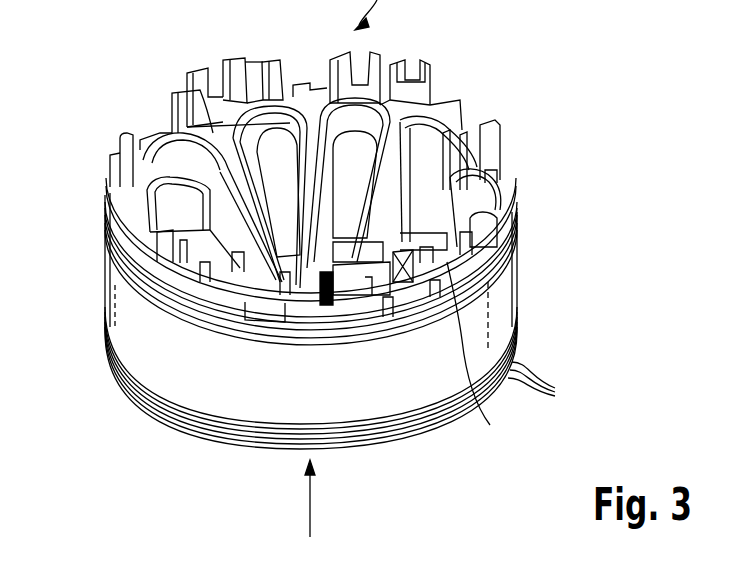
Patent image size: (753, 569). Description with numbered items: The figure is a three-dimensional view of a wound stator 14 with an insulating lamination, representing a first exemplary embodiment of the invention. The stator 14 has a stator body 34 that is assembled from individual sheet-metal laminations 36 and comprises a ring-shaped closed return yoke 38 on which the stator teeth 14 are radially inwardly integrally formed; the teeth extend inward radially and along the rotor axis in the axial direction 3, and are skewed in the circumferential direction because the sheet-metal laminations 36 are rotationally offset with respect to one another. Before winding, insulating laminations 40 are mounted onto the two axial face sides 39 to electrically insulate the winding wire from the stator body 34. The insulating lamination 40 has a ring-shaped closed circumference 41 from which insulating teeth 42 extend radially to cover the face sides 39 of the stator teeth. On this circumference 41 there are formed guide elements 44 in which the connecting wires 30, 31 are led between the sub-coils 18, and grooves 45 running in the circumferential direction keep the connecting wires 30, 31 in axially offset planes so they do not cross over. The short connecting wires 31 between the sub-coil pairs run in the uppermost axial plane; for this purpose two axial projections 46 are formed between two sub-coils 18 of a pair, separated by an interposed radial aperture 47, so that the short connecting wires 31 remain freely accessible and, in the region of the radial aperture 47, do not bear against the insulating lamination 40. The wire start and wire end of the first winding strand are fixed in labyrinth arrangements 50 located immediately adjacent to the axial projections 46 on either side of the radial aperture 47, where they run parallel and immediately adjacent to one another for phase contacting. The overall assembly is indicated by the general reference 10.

The axial direction 3 is at (305, 512).
The stator 10 is at (220, 447).
The stator 14 is at (392, 203).
The sub-coil 18 is at (158, 197).
The connecting wire 30 is at (107, 218).
The short connecting wire 31 is at (223, 267).
The stator body 34 is at (516, 322).
The sheet-metal lamination 36 is at (545, 384).
The return yoke 38 is at (512, 225).
The axial face side 39 is at (515, 205).
The insulating lamination 40 is at (515, 237).
The ring-shaped closed circumference 41 is at (167, 295).
The insulating tooth 42 is at (160, 130).
The guide element 44 is at (268, 62).
The groove 45 is at (518, 262).
The axial projection 46 is at (230, 62).
The radial aperture 47 is at (212, 78).
The labyrinth arrangement 50 is at (470, 74).